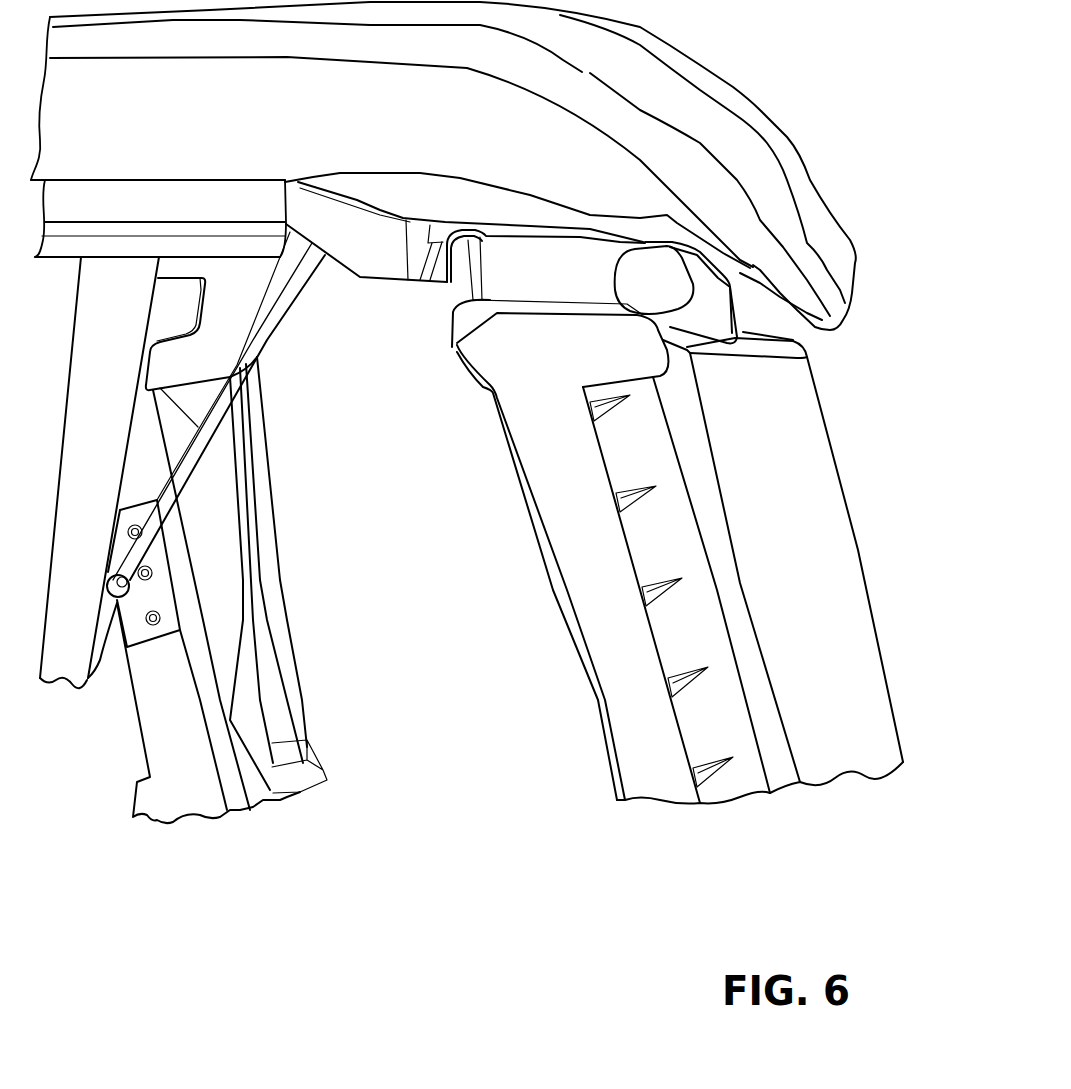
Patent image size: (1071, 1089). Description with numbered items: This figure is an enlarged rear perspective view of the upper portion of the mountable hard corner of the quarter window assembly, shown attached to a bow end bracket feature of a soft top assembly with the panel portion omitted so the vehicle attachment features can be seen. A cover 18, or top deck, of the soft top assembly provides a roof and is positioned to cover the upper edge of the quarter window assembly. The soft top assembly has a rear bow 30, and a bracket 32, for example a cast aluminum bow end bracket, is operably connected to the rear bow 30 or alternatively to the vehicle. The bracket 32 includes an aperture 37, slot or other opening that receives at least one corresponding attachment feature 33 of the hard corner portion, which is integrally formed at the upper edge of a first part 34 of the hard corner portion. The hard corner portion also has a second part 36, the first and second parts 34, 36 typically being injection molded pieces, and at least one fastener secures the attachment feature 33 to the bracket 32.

The cover 18 is at (840, 307).
The rear bow 30 is at (283, 268).
The bracket 32 is at (417, 288).
The attachment feature 33 is at (460, 292).
The first part 34 is at (617, 733).
The second part 36 is at (877, 690).
The aperture 37 is at (443, 270).